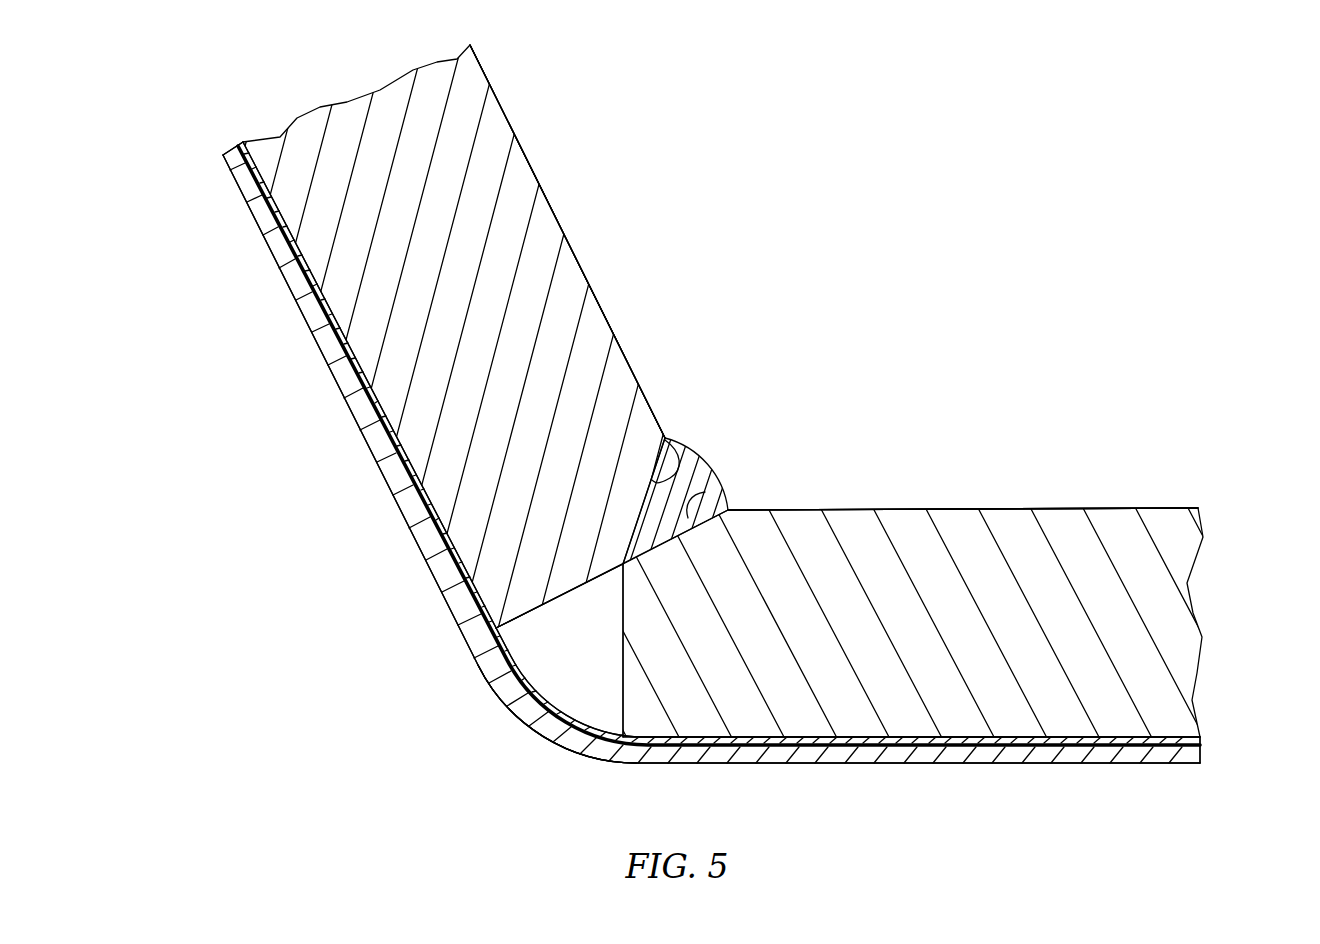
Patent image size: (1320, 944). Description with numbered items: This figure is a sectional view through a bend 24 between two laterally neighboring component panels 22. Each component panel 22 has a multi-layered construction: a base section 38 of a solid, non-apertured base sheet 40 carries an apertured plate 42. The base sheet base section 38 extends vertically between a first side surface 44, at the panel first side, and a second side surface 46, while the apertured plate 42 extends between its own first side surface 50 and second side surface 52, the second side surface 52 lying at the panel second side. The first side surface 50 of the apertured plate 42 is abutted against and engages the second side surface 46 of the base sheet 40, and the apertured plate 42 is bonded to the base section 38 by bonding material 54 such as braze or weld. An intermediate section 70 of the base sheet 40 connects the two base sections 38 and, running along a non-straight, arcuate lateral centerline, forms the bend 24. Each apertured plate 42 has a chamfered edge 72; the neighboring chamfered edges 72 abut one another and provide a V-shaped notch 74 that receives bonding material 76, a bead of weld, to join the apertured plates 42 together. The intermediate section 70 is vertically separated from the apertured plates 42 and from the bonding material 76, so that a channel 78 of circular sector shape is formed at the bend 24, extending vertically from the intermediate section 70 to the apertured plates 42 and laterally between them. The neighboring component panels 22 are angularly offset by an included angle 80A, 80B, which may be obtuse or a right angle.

The component panel 22 is at (572, 162).
The bend 24 is at (496, 716).
The base section 38 is at (331, 391).
The base sheet 40 is at (1211, 752).
The apertured plate 42 is at (572, 240).
The first side surface 44 is at (255, 222).
The second side surface 46 is at (276, 203).
The first side surface 50 is at (302, 268).
The second side surface 52 is at (516, 134).
The bonding material 54 is at (247, 138).
The intermediate section 70 is at (522, 712).
The chamfered edge 72 is at (677, 466).
The notch 74 is at (677, 543).
The bonding material 76 is at (704, 452).
The channel 78 is at (580, 679).
The included angle 80A is at (602, 303).
The included angle 80B is at (877, 508).